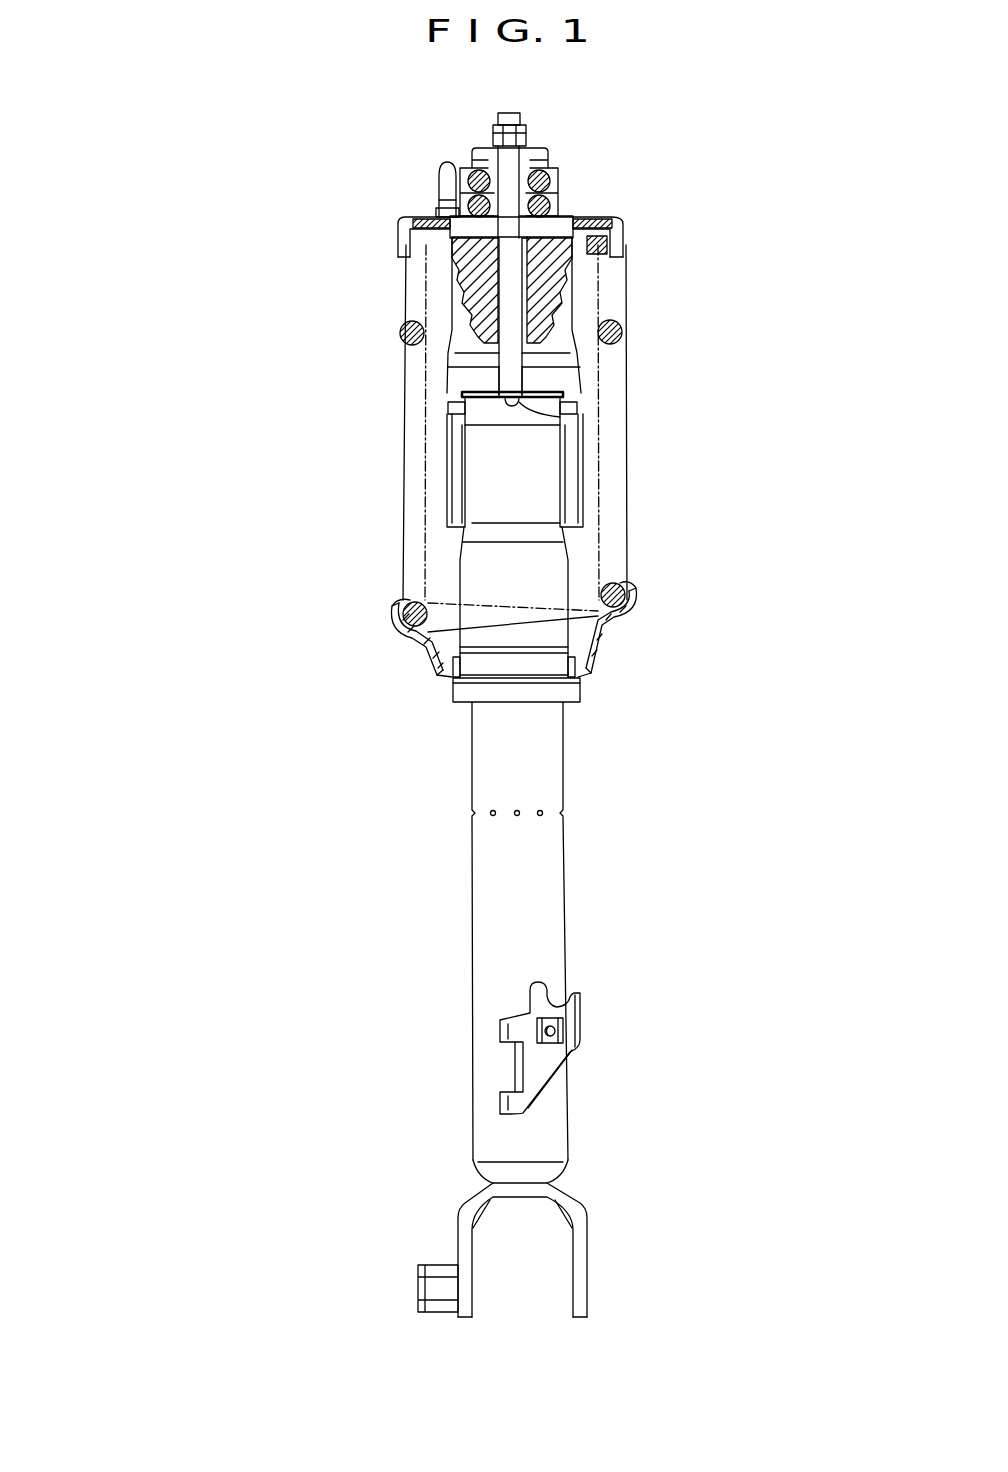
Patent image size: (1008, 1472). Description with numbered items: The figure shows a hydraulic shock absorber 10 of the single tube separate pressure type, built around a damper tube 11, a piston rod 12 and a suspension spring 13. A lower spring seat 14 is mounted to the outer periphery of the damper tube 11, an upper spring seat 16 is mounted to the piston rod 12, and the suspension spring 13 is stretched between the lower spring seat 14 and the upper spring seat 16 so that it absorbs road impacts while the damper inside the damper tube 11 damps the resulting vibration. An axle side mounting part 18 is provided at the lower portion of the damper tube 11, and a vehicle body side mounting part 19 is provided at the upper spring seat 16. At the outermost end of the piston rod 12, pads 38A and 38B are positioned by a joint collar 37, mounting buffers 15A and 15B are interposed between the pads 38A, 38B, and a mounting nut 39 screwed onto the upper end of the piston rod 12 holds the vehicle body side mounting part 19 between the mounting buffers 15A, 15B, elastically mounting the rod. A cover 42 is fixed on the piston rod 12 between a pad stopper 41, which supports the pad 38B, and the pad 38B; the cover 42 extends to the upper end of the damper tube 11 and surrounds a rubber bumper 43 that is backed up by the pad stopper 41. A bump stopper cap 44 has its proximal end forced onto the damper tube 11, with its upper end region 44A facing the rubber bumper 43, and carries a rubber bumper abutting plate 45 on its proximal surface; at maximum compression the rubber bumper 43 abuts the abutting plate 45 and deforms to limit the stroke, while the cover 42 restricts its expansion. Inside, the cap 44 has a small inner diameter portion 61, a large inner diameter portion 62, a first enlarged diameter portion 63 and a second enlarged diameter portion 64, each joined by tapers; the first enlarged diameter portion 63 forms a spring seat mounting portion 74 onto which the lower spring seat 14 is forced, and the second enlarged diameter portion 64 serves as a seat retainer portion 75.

The hydraulic shock absorber 10 is at (285, 262).
The damper tube 11 is at (472, 902).
The piston rod 12 is at (533, 377).
The suspension spring 13 is at (388, 336).
The lower spring seat 14 is at (424, 660).
The mounting buffer 15A is at (555, 195).
The mounting buffer 15B is at (562, 215).
The upper spring seat 16 is at (397, 238).
The axle side mounting part 18 is at (457, 1240).
The vehicle body side mounting part 19 is at (422, 213).
The joint collar 37 is at (548, 172).
The pad 38A is at (545, 153).
The pad 38B is at (545, 228).
The mounting nut 39 is at (540, 148).
The pad stopper 41 is at (537, 240).
The cover 42 is at (578, 305).
The rubber bumper 43 is at (557, 273).
The bump stopper cap 44 is at (545, 478).
The dust cover upper end 44A is at (567, 402).
The rubber bumper abutting plate 45 is at (553, 388).
The small inner diameter portion 61 is at (474, 413).
The large inner diameter portion 62 is at (474, 478).
The first enlarged diameter portion 63 is at (468, 572).
The second enlarged diameter portion 64 is at (490, 695).
The spring seat mounting portion 74 is at (550, 667).
The seat retainer portion 75 is at (547, 698).